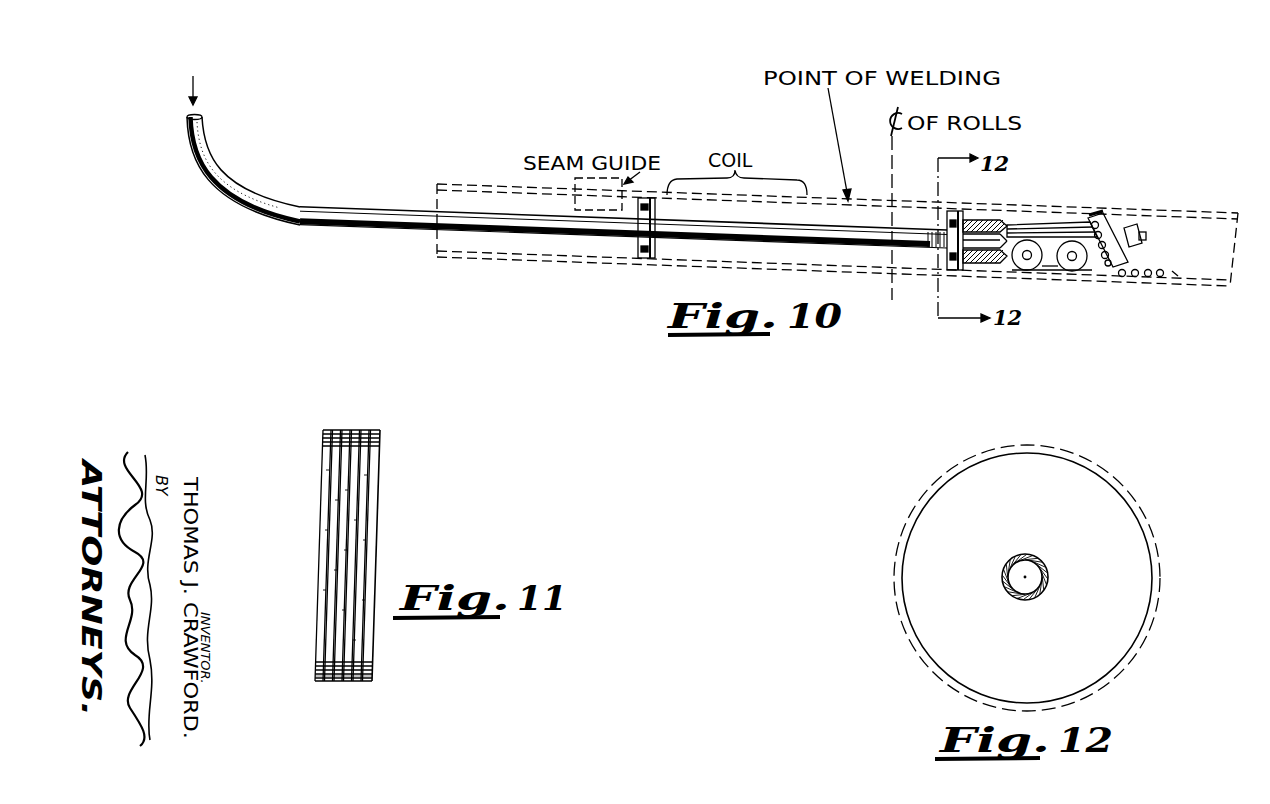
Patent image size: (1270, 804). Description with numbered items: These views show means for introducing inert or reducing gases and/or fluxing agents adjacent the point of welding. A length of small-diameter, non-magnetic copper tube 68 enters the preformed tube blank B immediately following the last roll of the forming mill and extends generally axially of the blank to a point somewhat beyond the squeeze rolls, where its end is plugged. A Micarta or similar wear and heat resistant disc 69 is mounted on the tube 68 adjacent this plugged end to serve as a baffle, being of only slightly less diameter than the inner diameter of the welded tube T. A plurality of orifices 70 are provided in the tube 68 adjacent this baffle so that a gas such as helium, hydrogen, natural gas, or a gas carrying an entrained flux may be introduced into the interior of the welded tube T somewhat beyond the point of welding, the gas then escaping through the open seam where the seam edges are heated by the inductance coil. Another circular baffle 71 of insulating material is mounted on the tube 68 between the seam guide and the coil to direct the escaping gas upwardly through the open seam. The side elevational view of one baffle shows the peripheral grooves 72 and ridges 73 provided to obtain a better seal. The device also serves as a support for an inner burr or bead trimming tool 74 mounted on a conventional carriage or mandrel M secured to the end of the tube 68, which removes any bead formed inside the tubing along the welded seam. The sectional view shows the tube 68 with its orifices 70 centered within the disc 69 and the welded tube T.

In FIG. 10, the copper tube 68 is at (226, 178).
In FIG. 12, the copper tube 68 is at (1033, 556).
In FIG. 10, the wear and heat resistant disc 69 is at (952, 270).
In FIG. 11, the wear and heat resistant disc 69 is at (371, 557).
In FIG. 12, the wear and heat resistant disc 69 is at (920, 541).
In FIG. 10, the orifices 70 is at (921, 248).
In FIG. 12, the orifices 70 is at (1006, 566).
In FIG. 10, the circular baffle 71 is at (650, 258).
In FIG. 11, the peripheral grooves 72 is at (370, 430).
In FIG. 11, the ridges 73 is at (322, 682).
In FIG. 10, the inner burr or bead trimming tool 74 is at (1107, 223).
In FIG. 10, the preformed tube blank B is at (486, 185).
In FIG. 10, the welded tube T is at (1080, 207).
In FIG. 12, the welded tube T is at (1158, 540).
In FIG. 10, the carriage or mandrel M is at (1050, 262).